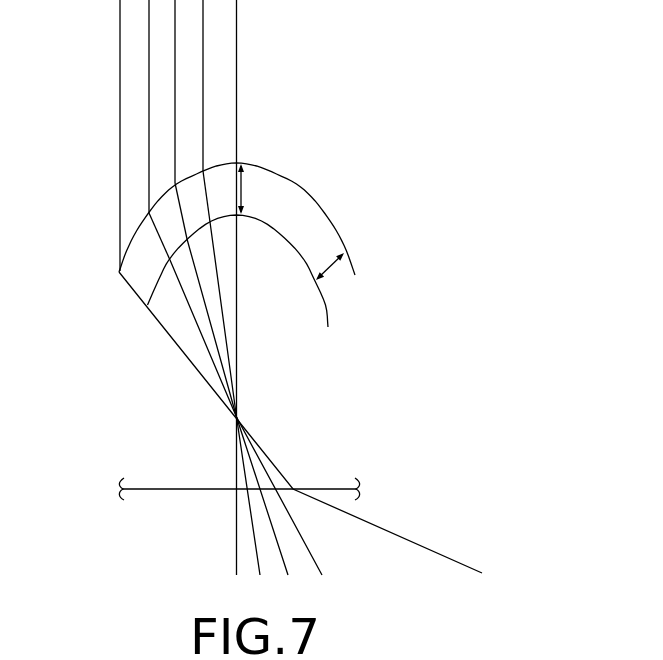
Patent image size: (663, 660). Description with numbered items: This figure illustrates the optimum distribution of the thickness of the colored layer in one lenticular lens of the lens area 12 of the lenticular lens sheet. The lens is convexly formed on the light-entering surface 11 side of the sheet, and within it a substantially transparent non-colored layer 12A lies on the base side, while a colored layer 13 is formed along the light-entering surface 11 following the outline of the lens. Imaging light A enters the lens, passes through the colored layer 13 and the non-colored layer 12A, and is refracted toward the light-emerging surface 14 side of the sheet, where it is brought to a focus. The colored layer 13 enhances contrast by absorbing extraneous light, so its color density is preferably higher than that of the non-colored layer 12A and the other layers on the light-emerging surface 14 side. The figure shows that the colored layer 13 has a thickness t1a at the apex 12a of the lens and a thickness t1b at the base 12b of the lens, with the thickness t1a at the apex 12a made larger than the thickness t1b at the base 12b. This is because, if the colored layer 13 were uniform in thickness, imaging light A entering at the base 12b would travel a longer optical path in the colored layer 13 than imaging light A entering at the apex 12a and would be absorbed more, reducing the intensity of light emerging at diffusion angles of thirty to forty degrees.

The light-entering surface 11 is at (254, 286).
The lens area 12 is at (254, 286).
The non-colored layer 12A is at (262, 256).
The apex of the lens 12a is at (238, 163).
The base of the lens 12b is at (118, 271).
The colored layer 13 is at (326, 231).
The light-emerging surface 14 is at (172, 492).
The imaging light A is at (238, 15).
The thickness at the apex of the lens t1a is at (262, 189).
The thickness at the base of the lens t1b is at (341, 277).